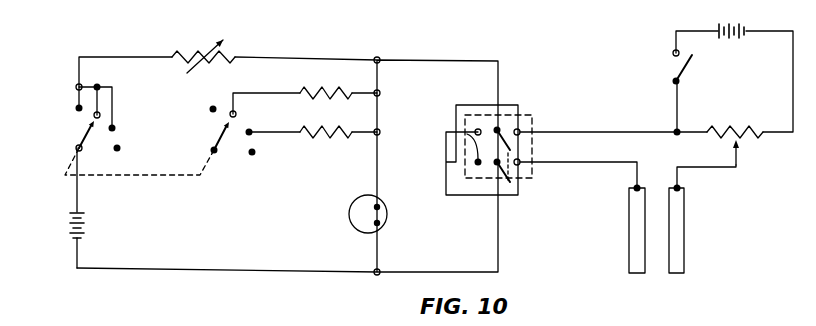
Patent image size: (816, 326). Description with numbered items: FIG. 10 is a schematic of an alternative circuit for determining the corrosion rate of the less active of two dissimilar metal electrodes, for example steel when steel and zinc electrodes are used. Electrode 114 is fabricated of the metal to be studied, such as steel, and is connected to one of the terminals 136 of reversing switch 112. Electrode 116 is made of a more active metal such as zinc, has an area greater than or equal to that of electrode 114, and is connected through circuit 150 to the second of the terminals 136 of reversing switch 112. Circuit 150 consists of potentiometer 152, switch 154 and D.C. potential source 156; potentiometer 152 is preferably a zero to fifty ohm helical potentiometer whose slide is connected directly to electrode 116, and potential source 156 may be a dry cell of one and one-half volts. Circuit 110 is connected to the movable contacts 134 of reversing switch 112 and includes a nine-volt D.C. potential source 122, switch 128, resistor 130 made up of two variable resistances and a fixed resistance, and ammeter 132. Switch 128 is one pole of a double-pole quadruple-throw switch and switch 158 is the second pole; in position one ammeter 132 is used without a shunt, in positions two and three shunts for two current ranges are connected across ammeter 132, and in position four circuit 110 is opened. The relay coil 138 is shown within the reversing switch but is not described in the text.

The circuit 110 is at (178, 118).
The reversing switch 112 is at (530, 179).
The electrode 114 is at (629, 248).
The electrode 116 is at (684, 248).
The D.C. potential source 122 is at (66, 222).
The switch 128 is at (83, 134).
The resistor 130 is at (192, 55).
The ammeter 132 is at (350, 216).
The movable contacts 134 is at (506, 131).
The terminals 136 is at (518, 161).
The relay coil 138 is at (475, 134).
The circuit 150 is at (752, 89).
The potentiometer 152 is at (748, 138).
The switch 154 is at (686, 60).
The D.C. potential source 156 is at (732, 21).
The switch 158 is at (218, 135).